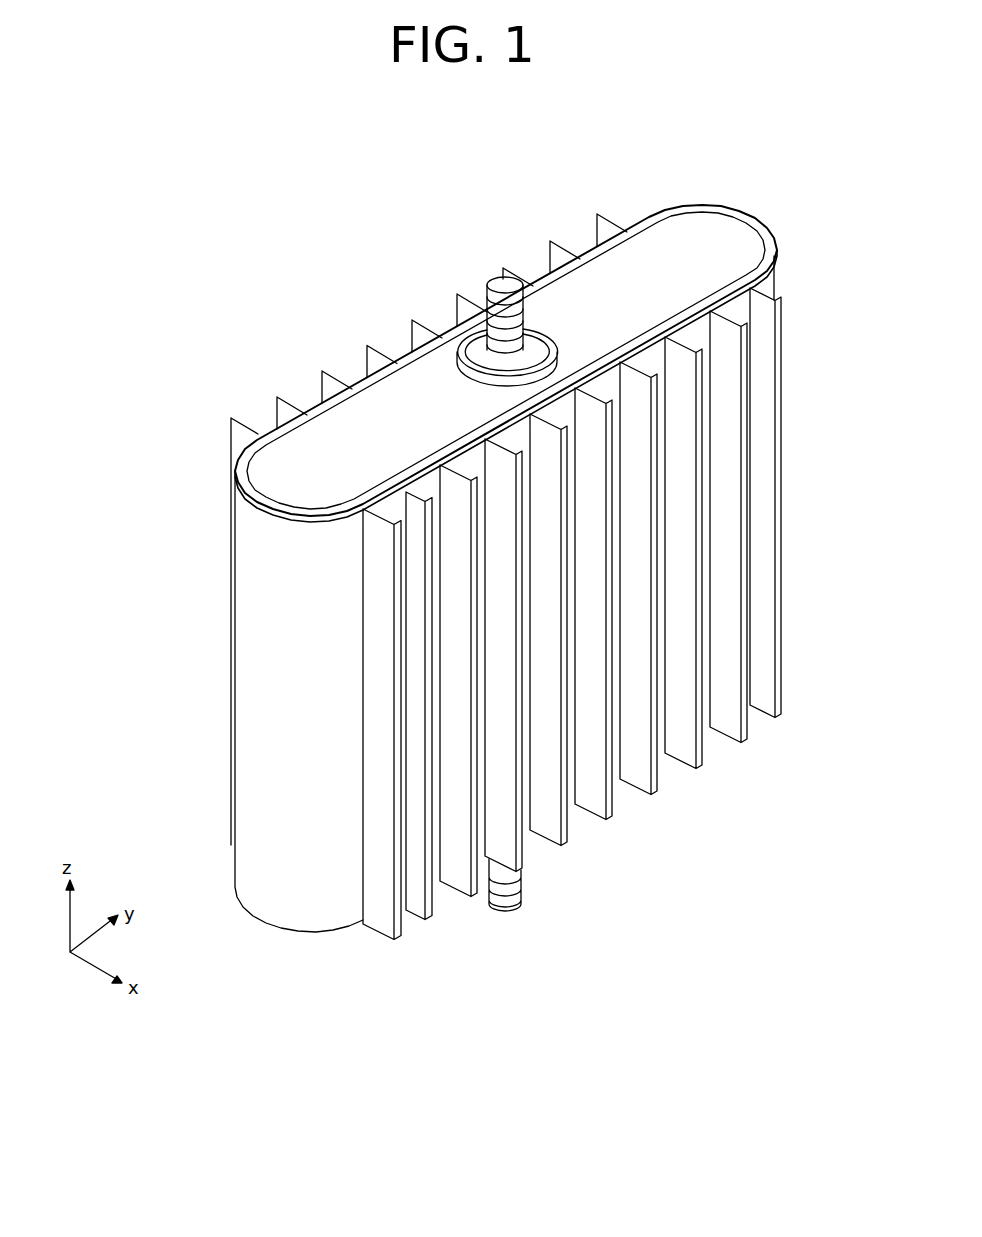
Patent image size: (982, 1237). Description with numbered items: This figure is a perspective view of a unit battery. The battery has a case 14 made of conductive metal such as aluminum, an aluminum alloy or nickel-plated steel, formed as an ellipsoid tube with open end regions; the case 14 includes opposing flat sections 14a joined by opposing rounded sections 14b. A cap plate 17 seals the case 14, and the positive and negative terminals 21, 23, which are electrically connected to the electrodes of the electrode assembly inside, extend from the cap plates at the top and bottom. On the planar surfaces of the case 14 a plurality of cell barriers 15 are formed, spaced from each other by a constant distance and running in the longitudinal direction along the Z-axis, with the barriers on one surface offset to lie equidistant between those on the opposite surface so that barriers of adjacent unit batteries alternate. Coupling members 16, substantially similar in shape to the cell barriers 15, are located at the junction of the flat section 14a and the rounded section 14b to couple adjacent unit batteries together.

The case 14 is at (297, 912).
The flat section 14a is at (408, 476).
The rounded section 14b is at (742, 218).
The cell barrier 15 is at (651, 794).
The coupling member 16 is at (384, 930).
The cap plate 17 is at (276, 486).
The positive terminal 21 is at (500, 283).
The negative terminal 23 is at (506, 912).